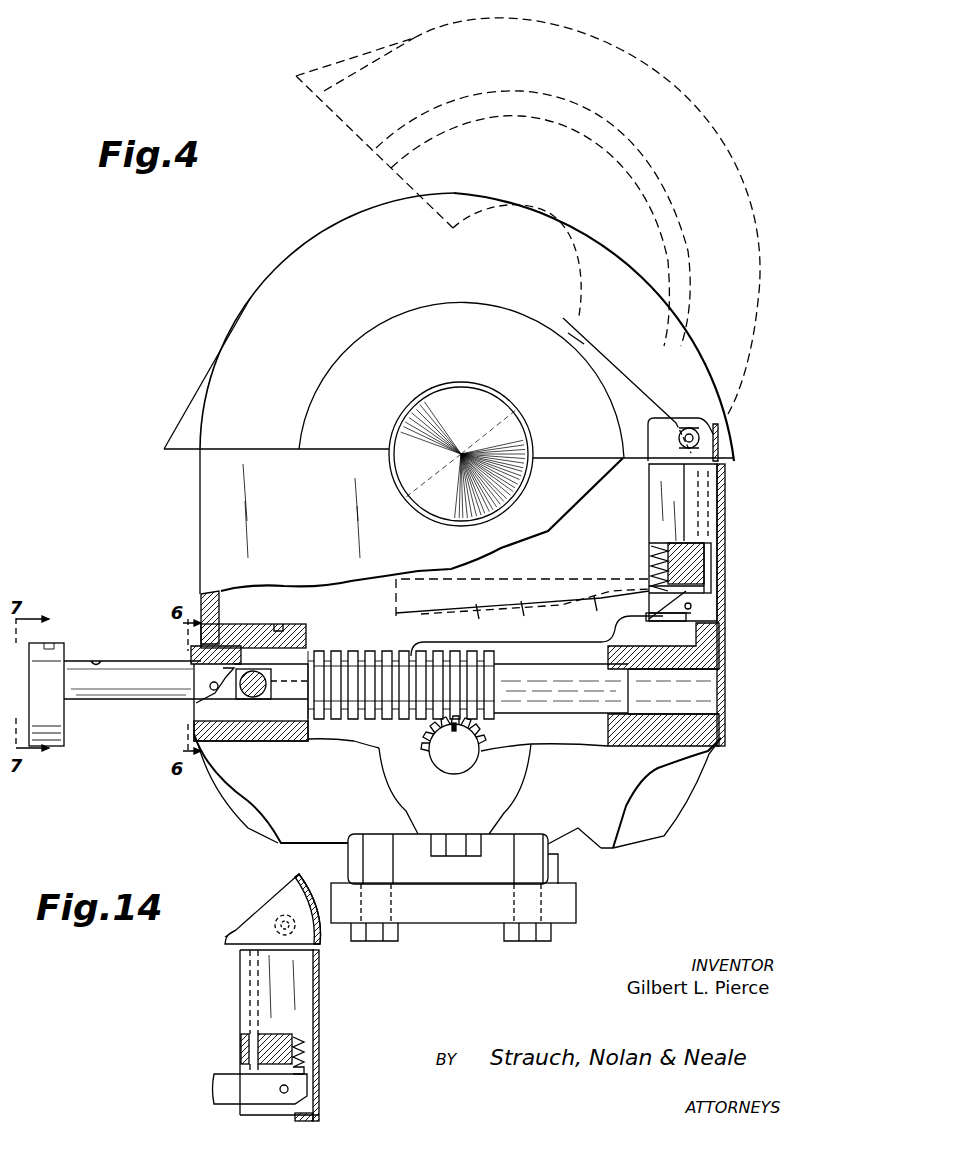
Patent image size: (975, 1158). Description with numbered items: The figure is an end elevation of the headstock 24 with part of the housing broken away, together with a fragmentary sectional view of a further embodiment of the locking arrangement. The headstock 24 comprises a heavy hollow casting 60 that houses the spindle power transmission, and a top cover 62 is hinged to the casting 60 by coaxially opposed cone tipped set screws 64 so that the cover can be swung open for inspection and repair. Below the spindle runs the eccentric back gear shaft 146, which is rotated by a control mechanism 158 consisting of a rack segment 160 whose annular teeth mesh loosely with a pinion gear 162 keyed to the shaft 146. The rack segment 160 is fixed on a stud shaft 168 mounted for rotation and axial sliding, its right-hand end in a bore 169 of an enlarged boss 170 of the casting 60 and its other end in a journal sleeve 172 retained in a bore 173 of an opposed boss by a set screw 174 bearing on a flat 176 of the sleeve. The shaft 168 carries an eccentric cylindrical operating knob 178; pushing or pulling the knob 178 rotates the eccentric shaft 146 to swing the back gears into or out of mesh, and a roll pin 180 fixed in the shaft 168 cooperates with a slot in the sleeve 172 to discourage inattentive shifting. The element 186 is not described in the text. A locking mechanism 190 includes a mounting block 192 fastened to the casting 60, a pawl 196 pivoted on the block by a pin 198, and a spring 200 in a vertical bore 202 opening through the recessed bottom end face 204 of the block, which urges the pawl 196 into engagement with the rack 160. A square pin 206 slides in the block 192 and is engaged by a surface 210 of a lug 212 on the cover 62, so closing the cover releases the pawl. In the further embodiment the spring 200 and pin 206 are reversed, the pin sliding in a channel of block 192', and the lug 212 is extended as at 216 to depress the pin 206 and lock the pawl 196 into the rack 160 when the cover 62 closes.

In FIG. 4, the headstock 24 is at (193, 497).
In FIG. 4, the headstock body casting 60 is at (720, 653).
In FIG. 14, the headstock body casting 60 is at (312, 980).
In FIG. 4, the top cover 62 is at (342, 60).
In FIG. 14, the top cover 62 is at (304, 884).
In FIG. 4, the cone tipped set screws 64 is at (700, 437).
In FIG. 14, the cone tipped set screws 64 is at (312, 930).
In FIG. 4, the back gear shaft 146 is at (448, 763).
In FIG. 4, the control mechanism 158 is at (138, 708).
In FIG. 4, the rack segment 160 is at (343, 652).
In FIG. 4, the pinion gear 162 is at (503, 747).
In FIG. 4, the stud shaft 168 is at (527, 666).
In FIG. 4, the bore 169 is at (722, 676).
In FIG. 4, the enlarged boss 170 is at (207, 671).
In FIG. 4, the journal sleeve 172 is at (228, 617).
In FIG. 4, the bore 173 is at (280, 623).
In FIG. 4, the set screw 174 is at (253, 712).
In FIG. 4, the flat 176 is at (267, 680).
In FIG. 4, the cylindrical operating knob 178 is at (53, 745).
In FIG. 4, the roll pin 180 is at (210, 688).
In FIG. 4, the nut 186 is at (195, 645).
In FIG. 4, the locking mechanism 190 is at (713, 522).
In FIG. 4, the mounting block 192 is at (644, 502).
In FIG. 14, the block 192' is at (325, 994).
In FIG. 4, the pawl 196 is at (522, 593).
In FIG. 14, the pawl 196 is at (212, 1082).
In FIG. 4, the pin 198 is at (692, 604).
In FIG. 14, the pin 198 is at (281, 1081).
In FIG. 4, the spring 200 is at (653, 553).
In FIG. 14, the spring 200 is at (298, 1052).
In FIG. 4, the vertical bore 202 is at (655, 572).
In FIG. 4, the bottom end face 204 is at (648, 645).
In FIG. 4, the square pin 206 is at (712, 575).
In FIG. 14, the square pin 206 is at (240, 1046).
In FIG. 4, the surface 210 is at (725, 466).
In FIG. 4, the lug 212 is at (700, 453).
In FIG. 14, the lug 212 is at (270, 905).
In FIG. 14, the extension 216 is at (225, 925).